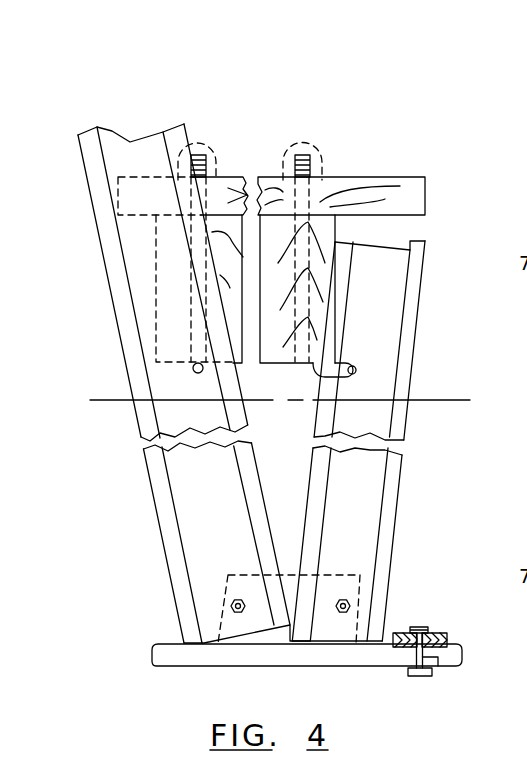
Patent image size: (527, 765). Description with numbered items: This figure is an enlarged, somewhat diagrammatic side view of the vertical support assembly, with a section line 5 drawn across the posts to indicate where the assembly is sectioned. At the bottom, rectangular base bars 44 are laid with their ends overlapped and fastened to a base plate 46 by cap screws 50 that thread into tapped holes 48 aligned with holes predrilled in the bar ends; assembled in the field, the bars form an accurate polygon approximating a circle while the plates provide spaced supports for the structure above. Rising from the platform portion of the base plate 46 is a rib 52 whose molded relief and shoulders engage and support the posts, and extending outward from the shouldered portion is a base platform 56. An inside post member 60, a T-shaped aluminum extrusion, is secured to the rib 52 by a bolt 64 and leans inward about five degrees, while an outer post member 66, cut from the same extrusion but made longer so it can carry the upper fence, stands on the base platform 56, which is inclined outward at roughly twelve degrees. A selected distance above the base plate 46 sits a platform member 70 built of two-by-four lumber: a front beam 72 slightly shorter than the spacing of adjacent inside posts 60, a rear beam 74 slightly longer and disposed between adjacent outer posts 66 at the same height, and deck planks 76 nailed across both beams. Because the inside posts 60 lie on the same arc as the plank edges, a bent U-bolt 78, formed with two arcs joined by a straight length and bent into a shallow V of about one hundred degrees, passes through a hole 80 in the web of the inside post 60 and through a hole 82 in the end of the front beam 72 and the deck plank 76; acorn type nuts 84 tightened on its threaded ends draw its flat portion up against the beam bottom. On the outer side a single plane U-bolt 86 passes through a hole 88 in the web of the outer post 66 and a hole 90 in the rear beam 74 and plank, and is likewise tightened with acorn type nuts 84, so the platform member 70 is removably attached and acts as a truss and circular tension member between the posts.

The section line 5- 5 is at (114, 409).
The base bars 44 is at (437, 641).
The base plate 46 is at (463, 656).
The tapped holes 48 is at (437, 675).
The cap screws 50 is at (420, 627).
The rib 52 is at (360, 576).
The base platform 56 is at (345, 644).
The inside post member 60 is at (385, 318).
The bolt 64 is at (351, 604).
The outer post member 66 is at (128, 325).
The platform member 70 is at (474, 171).
The front beam 72 is at (325, 231).
The rear beam 74 is at (242, 363).
The deck planks 76 is at (425, 197).
The bent U-bolt 78 is at (338, 380).
The hole 80 is at (353, 367).
The hole 82 is at (297, 188).
The acorn type nuts 84 is at (322, 164).
The single plane U-bolt 86 is at (197, 297).
The hole 88 is at (195, 371).
The hole 90 is at (204, 182).